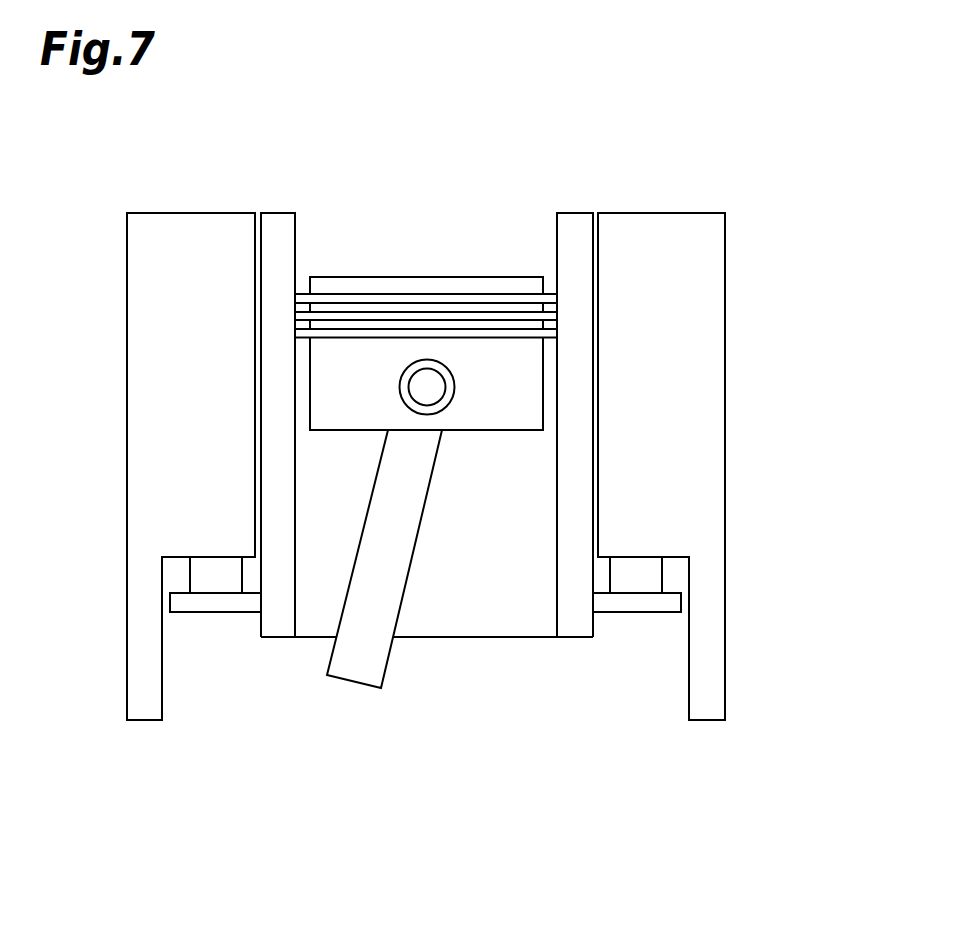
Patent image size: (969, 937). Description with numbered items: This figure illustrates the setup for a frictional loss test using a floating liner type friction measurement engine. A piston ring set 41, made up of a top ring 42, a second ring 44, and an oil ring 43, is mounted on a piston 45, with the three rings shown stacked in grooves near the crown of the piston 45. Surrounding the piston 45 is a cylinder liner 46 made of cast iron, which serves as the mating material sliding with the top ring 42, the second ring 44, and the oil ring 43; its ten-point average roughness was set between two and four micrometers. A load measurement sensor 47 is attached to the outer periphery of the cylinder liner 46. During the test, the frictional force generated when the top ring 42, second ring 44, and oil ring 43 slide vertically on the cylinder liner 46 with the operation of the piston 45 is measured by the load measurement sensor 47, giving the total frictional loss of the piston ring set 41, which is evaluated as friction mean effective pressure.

The piston ring set 41 is at (569, 283).
The top ring 42 is at (558, 297).
The oil ring 43 is at (558, 335).
The second ring 44 is at (558, 315).
The piston 45 is at (528, 390).
The cylinder liner 46 is at (577, 517).
The load measurement sensor 47 is at (638, 580).